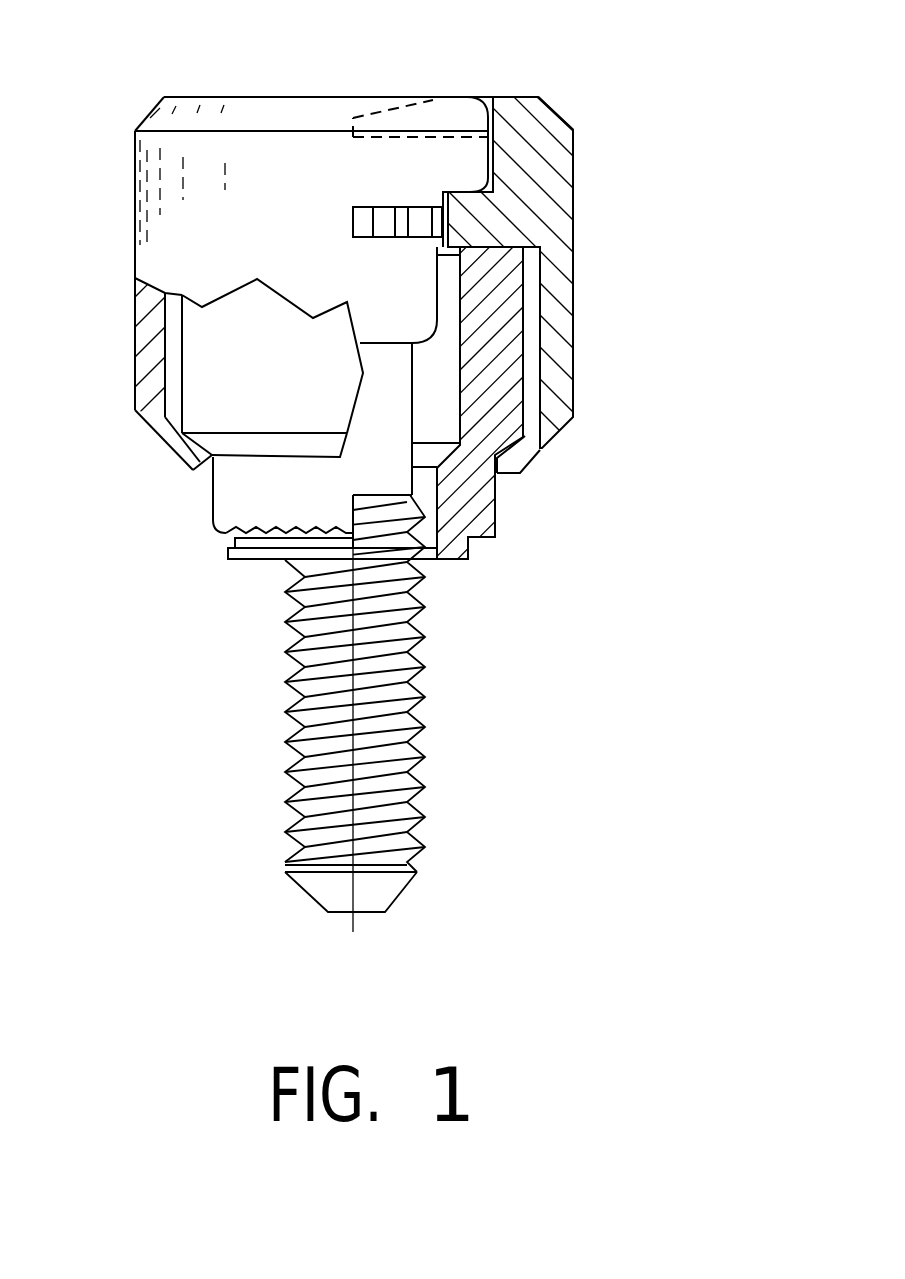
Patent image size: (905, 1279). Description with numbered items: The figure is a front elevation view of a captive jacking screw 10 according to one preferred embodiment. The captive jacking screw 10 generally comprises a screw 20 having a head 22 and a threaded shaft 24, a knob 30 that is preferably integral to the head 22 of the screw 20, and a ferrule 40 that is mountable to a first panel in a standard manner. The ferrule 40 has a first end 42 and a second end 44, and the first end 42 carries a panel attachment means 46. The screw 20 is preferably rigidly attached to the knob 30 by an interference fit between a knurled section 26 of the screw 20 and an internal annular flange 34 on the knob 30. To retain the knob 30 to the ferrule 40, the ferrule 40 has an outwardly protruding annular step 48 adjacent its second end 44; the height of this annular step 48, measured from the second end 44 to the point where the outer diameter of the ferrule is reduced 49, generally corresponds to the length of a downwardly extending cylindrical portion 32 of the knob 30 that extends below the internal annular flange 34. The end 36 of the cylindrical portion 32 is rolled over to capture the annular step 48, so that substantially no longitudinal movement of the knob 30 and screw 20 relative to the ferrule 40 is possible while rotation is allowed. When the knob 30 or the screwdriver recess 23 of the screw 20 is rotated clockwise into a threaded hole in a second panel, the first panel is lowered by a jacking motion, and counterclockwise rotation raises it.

The captive jacking screw 10 is at (661, 42).
The screw 20 is at (403, 297).
The head 22 is at (447, 160).
The screwdriver recess 23 is at (418, 122).
The threaded shaft 24 is at (420, 695).
The knurled section 26 is at (383, 207).
The knob 30 is at (573, 185).
The downwardly extending cylindrical portion 32 is at (552, 323).
The internal annular flange 34 is at (470, 217).
The end 36 is at (153, 440).
The ferrule 40 is at (496, 495).
The first end 42 is at (457, 562).
The second end 44 is at (507, 247).
The panel attachment means 46 is at (475, 548).
The annular step 48 is at (500, 368).
The point that the outer diameter of the ferrule is reduced 49 is at (512, 448).